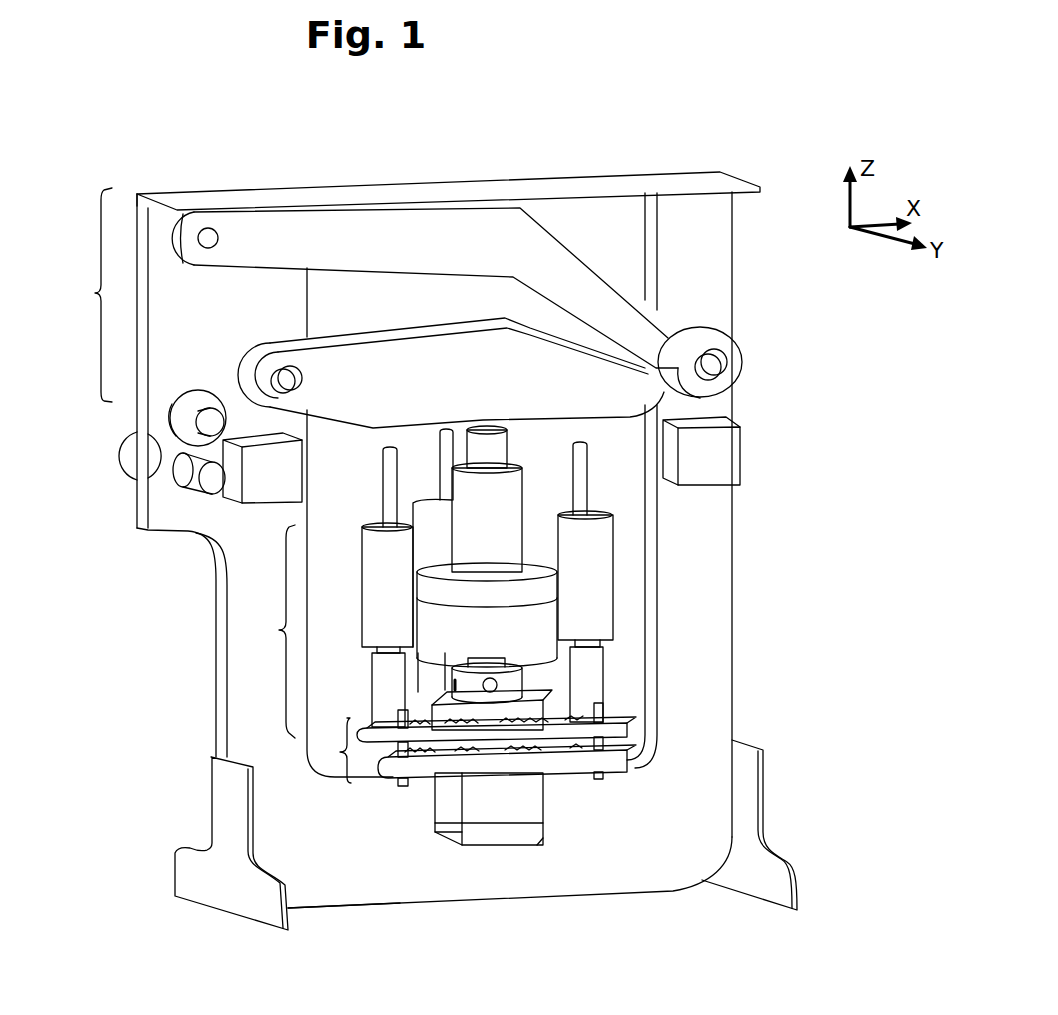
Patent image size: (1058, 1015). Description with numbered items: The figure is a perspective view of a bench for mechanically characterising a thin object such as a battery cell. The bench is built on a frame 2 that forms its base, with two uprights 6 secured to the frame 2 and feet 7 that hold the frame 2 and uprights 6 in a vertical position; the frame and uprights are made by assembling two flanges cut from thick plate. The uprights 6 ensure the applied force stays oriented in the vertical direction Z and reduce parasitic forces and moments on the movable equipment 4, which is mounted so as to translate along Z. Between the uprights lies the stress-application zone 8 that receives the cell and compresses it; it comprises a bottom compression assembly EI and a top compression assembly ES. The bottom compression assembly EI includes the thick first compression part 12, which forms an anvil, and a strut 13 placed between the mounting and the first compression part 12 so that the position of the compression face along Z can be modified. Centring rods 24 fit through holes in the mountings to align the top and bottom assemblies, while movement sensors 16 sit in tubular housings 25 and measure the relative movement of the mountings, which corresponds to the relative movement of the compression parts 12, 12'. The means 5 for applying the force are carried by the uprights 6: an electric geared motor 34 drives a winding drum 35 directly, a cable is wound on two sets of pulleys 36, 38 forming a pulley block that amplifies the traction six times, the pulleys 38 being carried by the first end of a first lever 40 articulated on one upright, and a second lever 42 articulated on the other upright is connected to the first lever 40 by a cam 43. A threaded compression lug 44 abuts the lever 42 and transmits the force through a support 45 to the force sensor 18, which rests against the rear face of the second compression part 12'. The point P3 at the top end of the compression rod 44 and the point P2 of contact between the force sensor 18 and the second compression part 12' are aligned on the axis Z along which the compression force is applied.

The frame 2 is at (322, 872).
The movable equipment 4 is at (274, 631).
The means for applying a force 5 is at (90, 295).
The uprights 6 is at (234, 592).
The feet 7 is at (236, 890).
The stress-application zone 8 is at (477, 749).
The first compression part 12 is at (494, 861).
The second compression part 12' is at (621, 691).
The strut 13 is at (487, 835).
The movement sensors 16 is at (587, 543).
The force sensor 18 is at (540, 630).
The centring rods 24 is at (400, 786).
The housings 25 is at (590, 658).
The electric geared motor 34 is at (130, 450).
The winding drum 35 is at (178, 470).
The set of pulleys 36 is at (177, 397).
The set of pulleys 38 is at (175, 235).
The first lever 40 is at (563, 262).
The second lever 42 is at (637, 392).
The cam 43 is at (693, 330).
The compression lug 44 is at (493, 450).
The support 45 is at (540, 585).
The top longitudinal end of the compression rod P3 is at (483, 427).
The connection point P2 is at (487, 667).
The top compression assembly ES is at (634, 735).
The bottom compression assembly EI is at (623, 775).